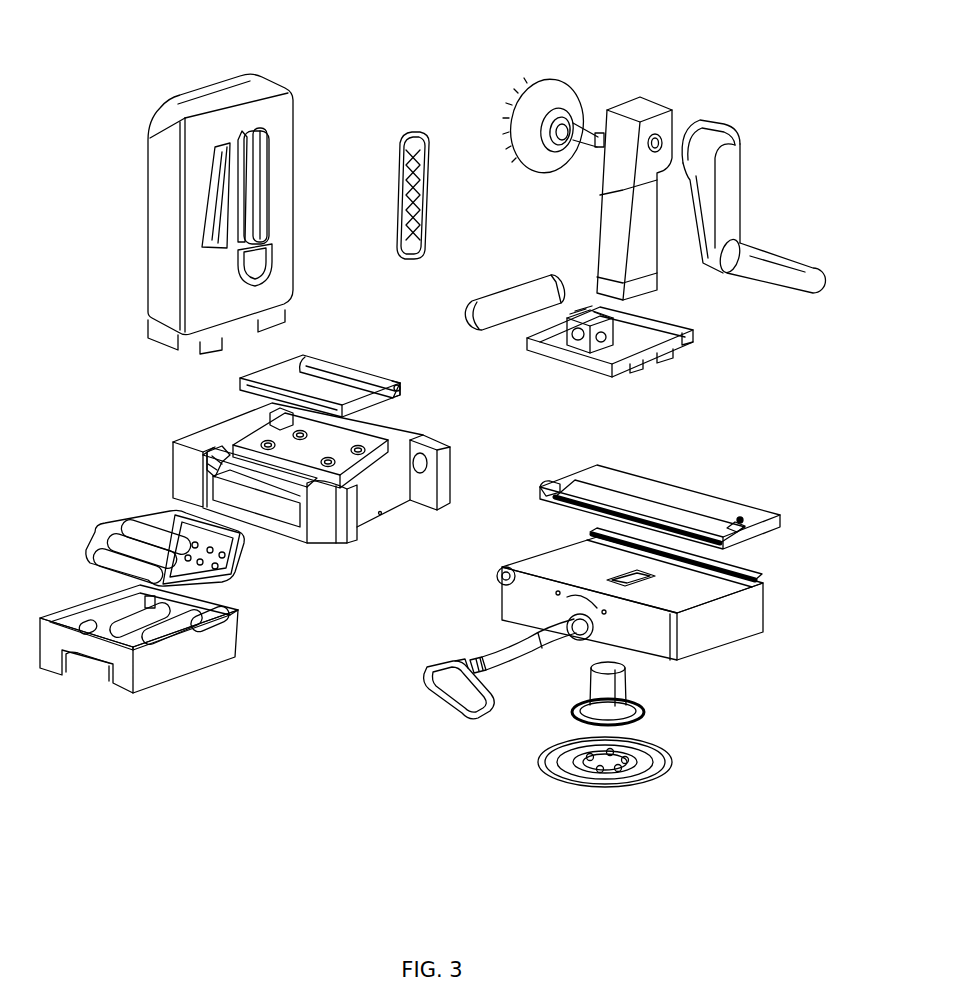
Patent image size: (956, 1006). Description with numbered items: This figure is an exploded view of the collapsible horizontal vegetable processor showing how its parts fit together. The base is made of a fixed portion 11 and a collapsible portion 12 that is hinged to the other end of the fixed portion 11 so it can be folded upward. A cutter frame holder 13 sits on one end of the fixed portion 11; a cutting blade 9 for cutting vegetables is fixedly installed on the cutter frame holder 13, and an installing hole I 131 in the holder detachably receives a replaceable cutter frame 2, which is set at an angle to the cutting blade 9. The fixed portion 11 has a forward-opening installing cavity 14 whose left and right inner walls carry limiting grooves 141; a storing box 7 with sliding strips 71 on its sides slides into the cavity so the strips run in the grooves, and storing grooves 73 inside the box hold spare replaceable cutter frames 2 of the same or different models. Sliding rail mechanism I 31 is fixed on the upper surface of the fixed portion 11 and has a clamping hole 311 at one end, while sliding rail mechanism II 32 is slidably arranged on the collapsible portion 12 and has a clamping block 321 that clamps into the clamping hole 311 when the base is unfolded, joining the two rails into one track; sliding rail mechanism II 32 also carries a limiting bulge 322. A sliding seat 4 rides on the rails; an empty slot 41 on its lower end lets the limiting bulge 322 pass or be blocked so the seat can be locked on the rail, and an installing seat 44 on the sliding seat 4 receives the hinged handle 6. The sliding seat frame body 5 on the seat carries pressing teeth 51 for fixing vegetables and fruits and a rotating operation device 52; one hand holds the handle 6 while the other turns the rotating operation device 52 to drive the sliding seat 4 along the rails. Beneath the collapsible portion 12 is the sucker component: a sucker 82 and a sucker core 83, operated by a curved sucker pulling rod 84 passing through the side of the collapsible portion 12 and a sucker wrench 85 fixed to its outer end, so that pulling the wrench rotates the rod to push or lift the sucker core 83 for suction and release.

The cutter frame holder 13 is at (283, 102).
The installing hole I 131 is at (253, 173).
The cutting blade 9 is at (212, 228).
The replaceable cutter frame 2 is at (427, 212).
The handle 6 is at (513, 288).
The pressing teeth 51 is at (557, 93).
The sliding seat frame body 5 is at (623, 145).
The rotating operation device 52 is at (727, 170).
The sliding seat 4 is at (657, 332).
The installing seat 44 is at (597, 342).
The empty slot 41 is at (667, 357).
The sliding rail mechanism I 31 is at (323, 385).
The clamping hole 311 is at (402, 395).
The fixed portion 11 is at (183, 477).
The installing cavity 14 is at (270, 512).
The limiting groove 141 is at (215, 457).
The storing box 7 is at (125, 685).
The sliding strip 71 is at (192, 652).
The storing groove 73 is at (118, 615).
The sliding rail mechanism II 32 is at (685, 508).
The limiting bulge 322 is at (737, 520).
The clamping block 321 is at (545, 490).
The collapsible portion 12 is at (727, 635).
The sucker pulling rod 84 is at (523, 653).
The sucker wrench 85 is at (447, 700).
The sucker core 83 is at (643, 713).
The sucker 82 is at (600, 790).